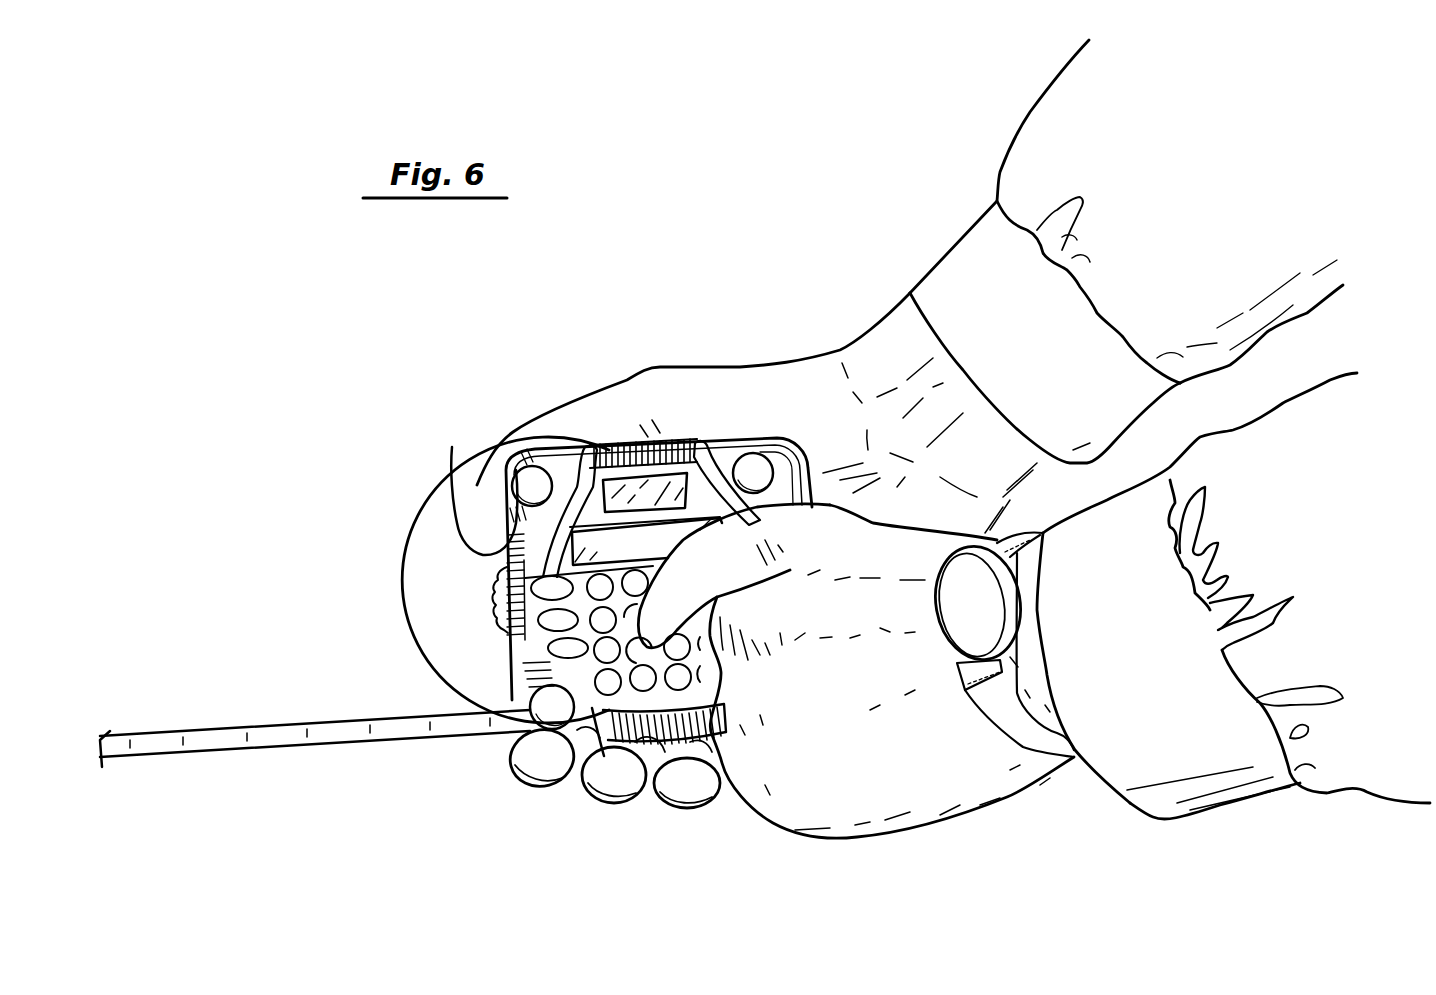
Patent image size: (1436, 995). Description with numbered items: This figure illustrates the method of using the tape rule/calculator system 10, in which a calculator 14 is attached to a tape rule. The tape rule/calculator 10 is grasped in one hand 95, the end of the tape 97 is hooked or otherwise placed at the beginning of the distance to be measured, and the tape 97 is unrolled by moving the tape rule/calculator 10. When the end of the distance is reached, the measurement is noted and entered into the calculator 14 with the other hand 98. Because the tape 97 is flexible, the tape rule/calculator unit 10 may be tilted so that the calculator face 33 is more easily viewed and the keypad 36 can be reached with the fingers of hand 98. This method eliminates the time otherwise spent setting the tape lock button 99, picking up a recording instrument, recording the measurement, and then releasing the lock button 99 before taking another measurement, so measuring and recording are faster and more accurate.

The tape rule/calculator system 10 is at (693, 423).
The calculator 14 is at (560, 558).
The calculator face 33 is at (583, 514).
The keypad 36 is at (540, 648).
The one hand 95 is at (633, 398).
The tape 97 is at (278, 734).
The other hand 98 is at (900, 783).
The tape lock button 99 is at (507, 612).